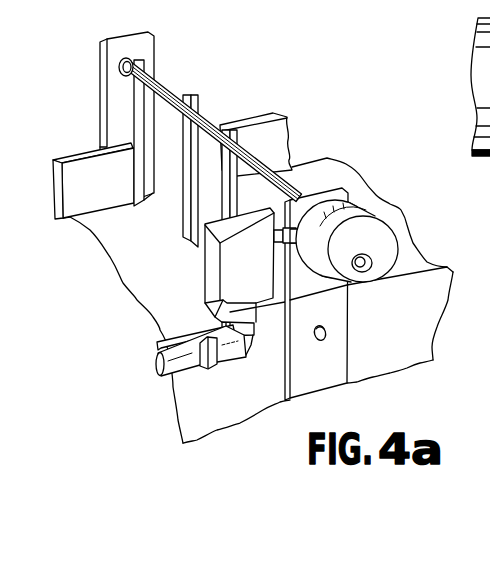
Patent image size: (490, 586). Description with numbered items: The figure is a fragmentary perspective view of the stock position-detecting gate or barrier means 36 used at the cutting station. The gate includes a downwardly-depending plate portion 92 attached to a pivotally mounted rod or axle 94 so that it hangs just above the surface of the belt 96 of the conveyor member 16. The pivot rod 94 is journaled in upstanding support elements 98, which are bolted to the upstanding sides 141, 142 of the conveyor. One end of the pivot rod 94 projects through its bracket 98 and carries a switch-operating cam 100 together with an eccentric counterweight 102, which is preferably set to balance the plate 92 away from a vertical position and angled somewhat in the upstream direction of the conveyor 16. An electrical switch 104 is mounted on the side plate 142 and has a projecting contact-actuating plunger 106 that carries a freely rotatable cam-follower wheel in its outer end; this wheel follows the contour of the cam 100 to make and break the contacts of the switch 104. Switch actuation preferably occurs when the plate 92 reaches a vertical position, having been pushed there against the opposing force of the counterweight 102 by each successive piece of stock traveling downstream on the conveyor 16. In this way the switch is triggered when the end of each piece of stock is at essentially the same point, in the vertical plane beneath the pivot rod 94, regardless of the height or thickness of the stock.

The conveyor member 16 is at (316, 163).
The stock position-detecting gate or barrier means 36 is at (199, 74).
The downwardly-depending plate portion 92 is at (167, 207).
The pivotally mounted rod or axle 94 is at (201, 117).
The belt 96 is at (179, 298).
The upstanding support elements 98 is at (100, 73).
The switch-operating cam 100 is at (355, 204).
The eccentric counterweight 102 is at (392, 240).
The electrical switch 104 is at (258, 277).
The contact-actuating plunger 106 is at (281, 244).
The upstanding side 141 is at (85, 167).
The upstanding side 142 is at (240, 412).